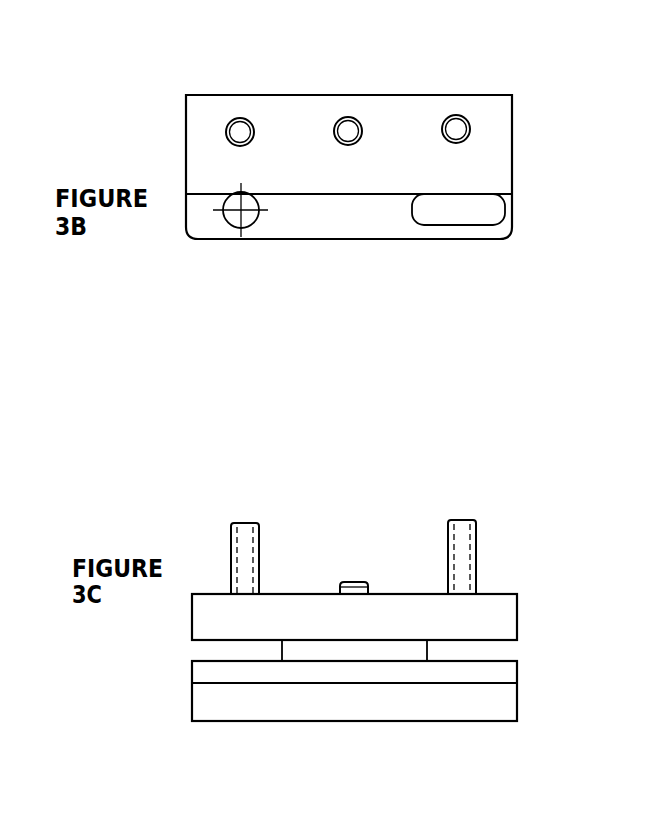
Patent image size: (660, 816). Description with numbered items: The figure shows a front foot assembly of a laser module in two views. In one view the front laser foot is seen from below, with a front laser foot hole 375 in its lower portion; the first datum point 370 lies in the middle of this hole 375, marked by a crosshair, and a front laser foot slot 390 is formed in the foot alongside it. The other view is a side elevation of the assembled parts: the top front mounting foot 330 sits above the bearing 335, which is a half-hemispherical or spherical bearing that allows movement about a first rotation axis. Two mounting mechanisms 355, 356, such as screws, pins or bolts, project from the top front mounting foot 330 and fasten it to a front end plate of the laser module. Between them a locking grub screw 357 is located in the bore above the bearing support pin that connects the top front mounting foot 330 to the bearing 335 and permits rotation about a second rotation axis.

In FIG. 3C, the top front mounting foot 330 is at (406, 616).
In FIG. 3C, the bearing 335 is at (450, 647).
In FIG. 3C, the mounting mechanism 355 is at (268, 519).
In FIG. 3C, the mounting mechanism 356 is at (495, 517).
In FIG. 3C, the locking grub screw 357 is at (387, 548).
In FIG. 3B, the first datum point 370 is at (201, 249).
In FIG. 3B, the front laser foot hole 375 is at (276, 236).
In FIG. 3B, the front laser foot slot 390 is at (449, 249).